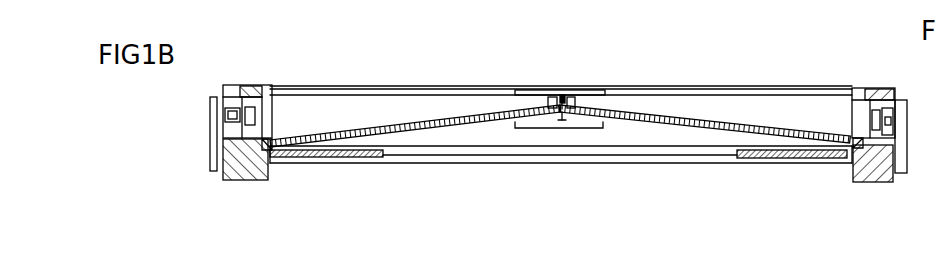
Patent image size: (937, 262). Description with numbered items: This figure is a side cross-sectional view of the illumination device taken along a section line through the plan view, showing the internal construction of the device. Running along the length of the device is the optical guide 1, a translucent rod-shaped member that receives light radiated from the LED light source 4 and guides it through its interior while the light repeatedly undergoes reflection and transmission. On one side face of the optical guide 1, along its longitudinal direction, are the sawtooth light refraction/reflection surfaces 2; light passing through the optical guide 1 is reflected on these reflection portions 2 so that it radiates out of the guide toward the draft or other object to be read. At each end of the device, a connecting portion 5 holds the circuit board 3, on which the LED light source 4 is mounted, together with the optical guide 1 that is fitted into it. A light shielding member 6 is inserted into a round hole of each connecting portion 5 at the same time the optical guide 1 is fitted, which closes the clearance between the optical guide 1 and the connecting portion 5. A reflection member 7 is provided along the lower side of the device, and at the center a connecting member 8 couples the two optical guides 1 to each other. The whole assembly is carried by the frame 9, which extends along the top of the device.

The optical guide 1 is at (561, 98).
The light refraction/reflection surfaces 2 is at (502, 123).
The circuit board 3 is at (208, 136).
The LED light source 4 is at (233, 97).
The connecting portion 5 is at (247, 180).
The light shielding member 6 is at (273, 162).
The reflection member 7 is at (332, 155).
The connecting member 8 is at (537, 90).
The frame 9 is at (628, 86).